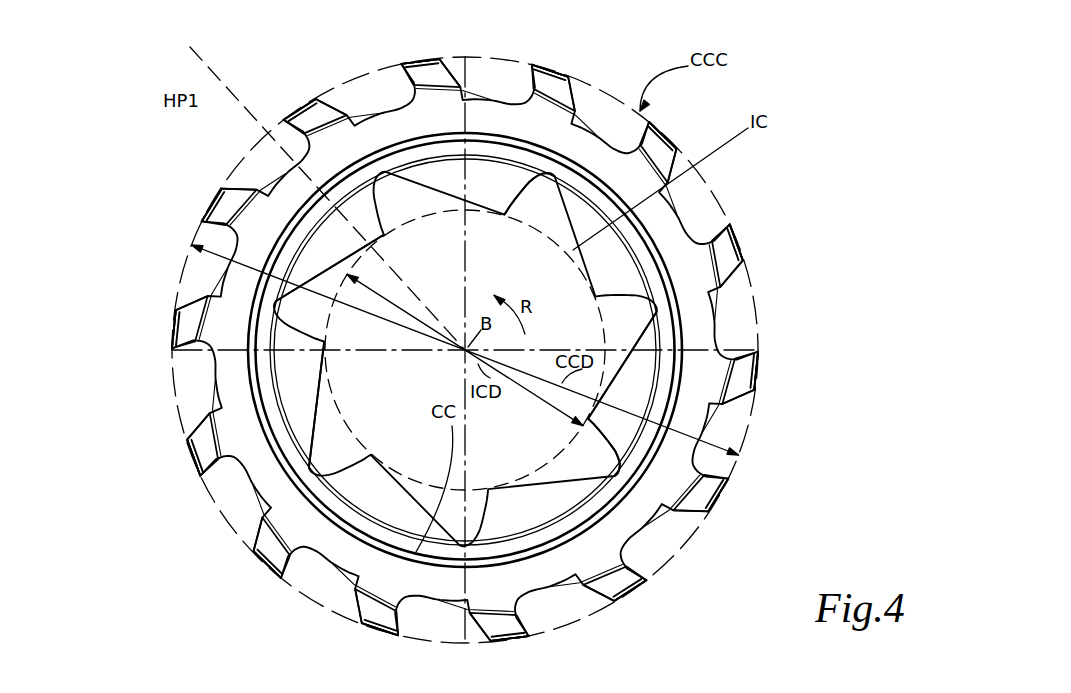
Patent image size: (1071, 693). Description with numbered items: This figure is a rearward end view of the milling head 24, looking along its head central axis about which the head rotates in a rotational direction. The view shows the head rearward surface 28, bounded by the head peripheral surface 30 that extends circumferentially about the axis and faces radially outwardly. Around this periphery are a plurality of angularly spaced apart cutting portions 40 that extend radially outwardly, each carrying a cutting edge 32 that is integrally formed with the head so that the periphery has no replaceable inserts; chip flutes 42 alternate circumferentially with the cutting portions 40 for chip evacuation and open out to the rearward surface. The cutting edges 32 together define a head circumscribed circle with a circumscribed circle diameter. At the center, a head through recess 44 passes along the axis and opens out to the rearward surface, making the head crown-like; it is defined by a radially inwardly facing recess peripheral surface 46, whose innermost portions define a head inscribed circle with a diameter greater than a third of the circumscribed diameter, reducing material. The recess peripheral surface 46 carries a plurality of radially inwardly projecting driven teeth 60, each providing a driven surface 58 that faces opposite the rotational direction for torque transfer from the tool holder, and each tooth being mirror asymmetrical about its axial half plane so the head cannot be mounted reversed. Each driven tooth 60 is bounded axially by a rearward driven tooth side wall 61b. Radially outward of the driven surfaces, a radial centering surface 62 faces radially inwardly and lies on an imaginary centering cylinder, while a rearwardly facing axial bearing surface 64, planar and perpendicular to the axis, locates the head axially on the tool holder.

The milling head 24 is at (103, 77).
The head rearward surface 28 is at (547, 107).
The head peripheral surface 30 is at (744, 236).
The cutting edge 32 is at (398, 63).
The cutting portion 40 is at (742, 516).
The chip flute 42 is at (660, 550).
The head through recess 44 is at (427, 453).
The recess peripheral surface 46 is at (447, 143).
The driven surface 58 is at (524, 199).
The driven tooth 60 is at (503, 213).
The rearward driven tooth side wall 61b is at (302, 358).
The radial centering surface 62 is at (577, 527).
The axial bearing surface 64 is at (290, 427).